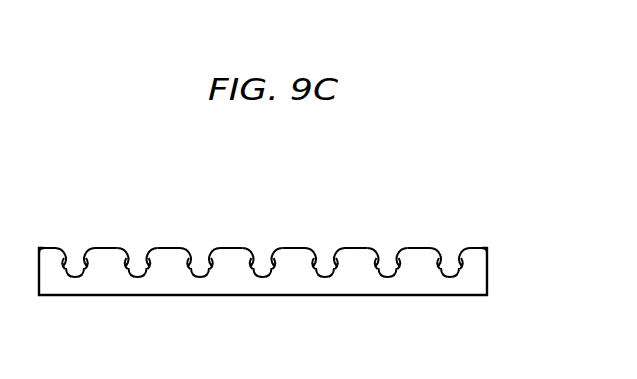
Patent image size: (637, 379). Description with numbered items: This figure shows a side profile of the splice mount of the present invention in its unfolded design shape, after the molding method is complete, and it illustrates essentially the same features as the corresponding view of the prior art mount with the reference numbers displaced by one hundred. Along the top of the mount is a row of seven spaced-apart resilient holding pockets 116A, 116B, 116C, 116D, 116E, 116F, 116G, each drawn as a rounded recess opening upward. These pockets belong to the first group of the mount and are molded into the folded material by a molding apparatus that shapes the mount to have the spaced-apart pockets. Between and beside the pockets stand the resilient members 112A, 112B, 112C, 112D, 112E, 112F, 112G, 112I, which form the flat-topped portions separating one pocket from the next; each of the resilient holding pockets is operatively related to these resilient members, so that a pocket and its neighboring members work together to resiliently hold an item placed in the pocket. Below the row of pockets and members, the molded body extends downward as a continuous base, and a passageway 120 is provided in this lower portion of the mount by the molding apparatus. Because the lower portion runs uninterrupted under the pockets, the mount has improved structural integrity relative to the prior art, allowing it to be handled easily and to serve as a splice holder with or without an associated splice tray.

The resilient member 112A is at (47, 248).
The resilient member 112B is at (106, 248).
The resilient member 112C is at (169, 248).
The resilient member 112D is at (231, 248).
The resilient member 112E is at (294, 248).
The resilient member 112F is at (356, 248).
The resilient member 112G is at (419, 248).
The resilient member 112I is at (480, 248).
The resilient holding pocket 116A is at (73, 252).
The resilient holding pocket 116B is at (136, 252).
The resilient holding pocket 116C is at (198, 252).
The resilient holding pocket 116D is at (260, 252).
The resilient holding pocket 116E is at (323, 252).
The resilient holding pocket 116F is at (386, 252).
The resilient holding pocket 116G is at (448, 252).
The passageway 120 is at (76, 276).